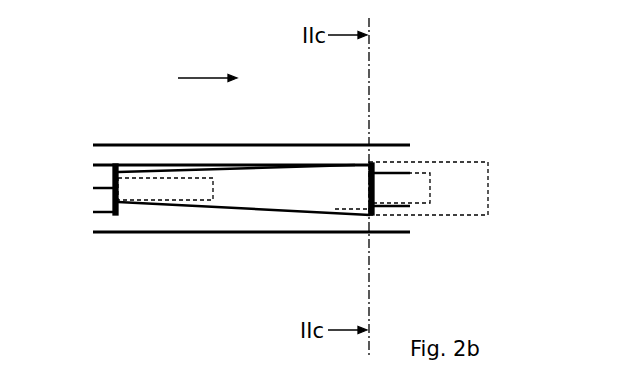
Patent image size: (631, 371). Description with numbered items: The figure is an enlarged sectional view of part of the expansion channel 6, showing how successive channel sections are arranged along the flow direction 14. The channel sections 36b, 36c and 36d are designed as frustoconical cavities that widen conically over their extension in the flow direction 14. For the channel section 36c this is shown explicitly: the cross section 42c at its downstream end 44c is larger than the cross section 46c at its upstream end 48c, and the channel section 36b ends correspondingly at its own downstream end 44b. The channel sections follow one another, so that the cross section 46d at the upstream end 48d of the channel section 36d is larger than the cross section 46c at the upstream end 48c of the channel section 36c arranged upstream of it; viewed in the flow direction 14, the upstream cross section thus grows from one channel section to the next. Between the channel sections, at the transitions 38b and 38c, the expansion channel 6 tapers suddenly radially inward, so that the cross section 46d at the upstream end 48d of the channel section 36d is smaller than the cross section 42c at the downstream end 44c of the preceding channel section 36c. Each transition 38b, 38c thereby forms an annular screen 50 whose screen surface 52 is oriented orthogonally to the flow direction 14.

The flow direction 14 is at (203, 78).
The downstream end 44b is at (108, 144).
The downstream end 44c is at (362, 139).
The transition 38b is at (115, 241).
The transition 38c is at (366, 241).
The channel section 36b is at (104, 206).
The channel section 36c is at (262, 170).
The channel section 36d is at (408, 208).
The upstream end 48c is at (122, 160).
The upstream end 48d is at (375, 158).
The annular screen 50 is at (335, 210).
The expansion channel 6 is at (262, 208).
The screen surface 52 is at (359, 160).
The cross section 46c is at (213, 189).
The cross section 46d is at (430, 188).
The cross section 42c is at (488, 188).